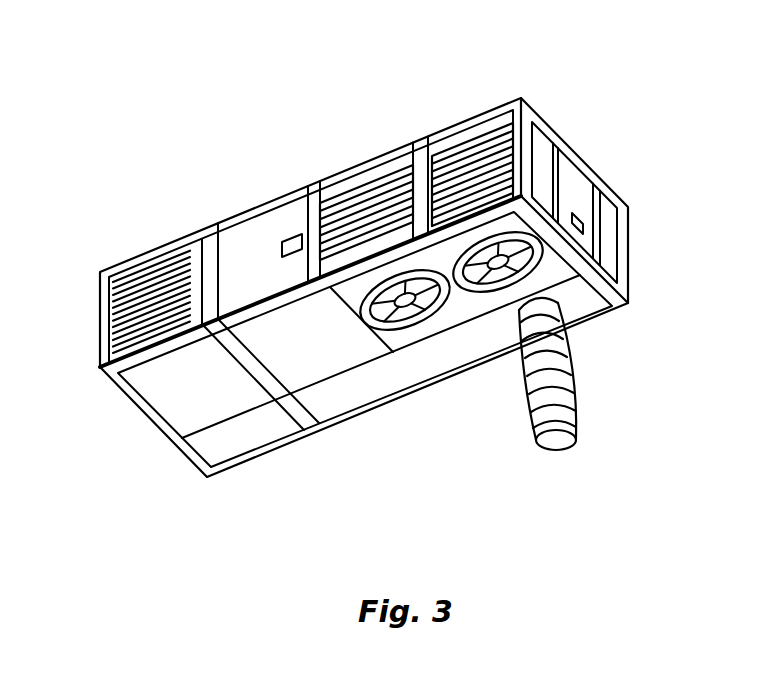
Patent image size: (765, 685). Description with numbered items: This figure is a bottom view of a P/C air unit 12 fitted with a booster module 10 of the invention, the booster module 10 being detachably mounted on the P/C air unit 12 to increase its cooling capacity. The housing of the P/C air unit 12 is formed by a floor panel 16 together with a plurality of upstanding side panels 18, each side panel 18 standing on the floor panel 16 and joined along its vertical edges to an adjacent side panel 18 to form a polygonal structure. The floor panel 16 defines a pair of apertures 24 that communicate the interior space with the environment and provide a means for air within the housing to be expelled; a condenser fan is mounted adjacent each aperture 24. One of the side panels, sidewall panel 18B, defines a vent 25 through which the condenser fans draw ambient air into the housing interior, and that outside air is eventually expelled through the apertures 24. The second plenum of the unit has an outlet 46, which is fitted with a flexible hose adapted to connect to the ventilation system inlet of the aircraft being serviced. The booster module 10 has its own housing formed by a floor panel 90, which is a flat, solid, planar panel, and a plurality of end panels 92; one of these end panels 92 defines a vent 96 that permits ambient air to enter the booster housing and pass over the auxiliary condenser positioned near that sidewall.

The booster module 10 is at (114, 271).
The P/C air unit 12 is at (503, 100).
The floor panel 16 is at (445, 325).
The side panels 18 is at (604, 186).
The sidewall panel 18B is at (470, 126).
The apertures 24 is at (366, 322).
The vent 25 is at (387, 180).
The outlet 46 is at (574, 316).
The floor panel 90 is at (313, 347).
The end panels 92 is at (213, 237).
The vent 96 is at (225, 257).